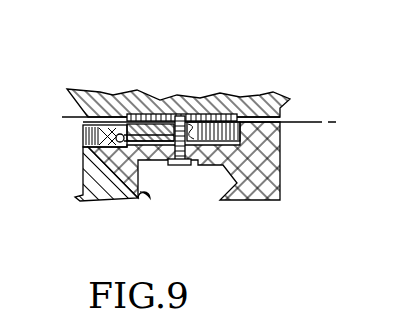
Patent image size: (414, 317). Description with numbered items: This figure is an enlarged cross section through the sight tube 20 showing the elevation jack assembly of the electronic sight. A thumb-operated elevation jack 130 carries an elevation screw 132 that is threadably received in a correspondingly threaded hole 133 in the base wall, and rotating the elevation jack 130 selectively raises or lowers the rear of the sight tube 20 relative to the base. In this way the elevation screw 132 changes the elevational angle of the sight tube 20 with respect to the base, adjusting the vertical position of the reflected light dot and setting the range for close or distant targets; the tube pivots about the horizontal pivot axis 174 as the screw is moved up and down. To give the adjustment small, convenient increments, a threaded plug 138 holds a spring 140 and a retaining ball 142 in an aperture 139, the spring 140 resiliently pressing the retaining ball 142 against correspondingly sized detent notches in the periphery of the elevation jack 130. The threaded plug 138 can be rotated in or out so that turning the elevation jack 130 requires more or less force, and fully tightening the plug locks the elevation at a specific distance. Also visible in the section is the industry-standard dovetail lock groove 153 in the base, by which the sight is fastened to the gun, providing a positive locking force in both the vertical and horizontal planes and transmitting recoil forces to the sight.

The sight tube 20 is at (280, 97).
The elevation jack 130 is at (244, 186).
The elevation screw 132 is at (180, 166).
The threaded hole 133 is at (197, 167).
The threaded plug 138 is at (83, 143).
The aperture 139 is at (98, 177).
The spring 140 is at (115, 138).
The retaining ball 142 is at (121, 150).
The dovetail lock groove 153 is at (139, 193).
The horizontal pivot axis 174 is at (314, 126).